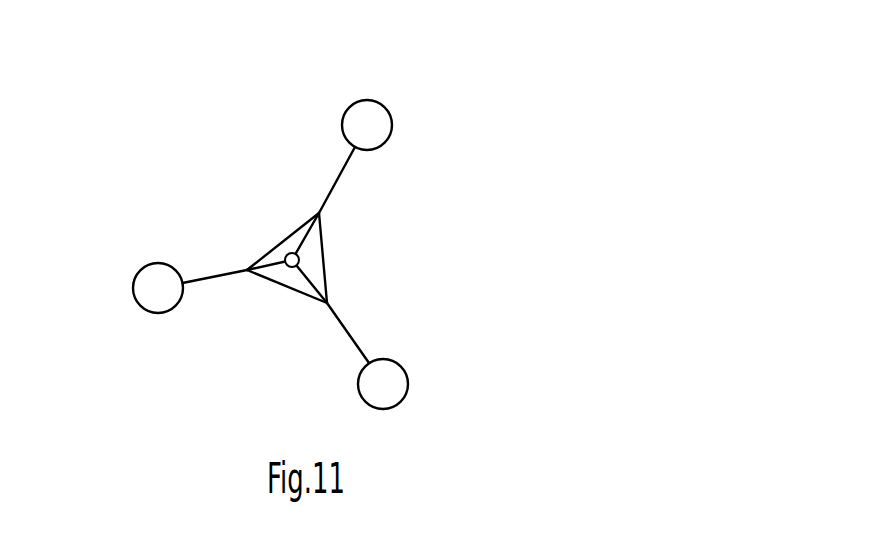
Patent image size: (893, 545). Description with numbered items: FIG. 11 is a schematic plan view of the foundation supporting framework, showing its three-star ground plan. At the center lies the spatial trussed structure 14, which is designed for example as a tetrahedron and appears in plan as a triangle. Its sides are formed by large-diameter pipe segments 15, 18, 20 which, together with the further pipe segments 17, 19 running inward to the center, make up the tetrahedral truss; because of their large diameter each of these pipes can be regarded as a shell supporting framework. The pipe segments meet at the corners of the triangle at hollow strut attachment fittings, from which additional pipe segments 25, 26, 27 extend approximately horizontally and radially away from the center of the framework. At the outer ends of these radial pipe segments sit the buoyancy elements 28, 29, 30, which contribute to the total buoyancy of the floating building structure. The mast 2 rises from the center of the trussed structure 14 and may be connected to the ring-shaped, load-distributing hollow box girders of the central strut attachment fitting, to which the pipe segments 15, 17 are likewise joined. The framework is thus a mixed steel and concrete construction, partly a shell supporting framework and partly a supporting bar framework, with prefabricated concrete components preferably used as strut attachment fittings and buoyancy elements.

The mast 2 is at (290, 253).
The central spatial trussed structure 14 is at (332, 246).
The pipe segment 15 is at (270, 279).
The pipe segment 17 is at (312, 278).
The pipe segment 18 is at (278, 242).
The pipe segment 19 is at (292, 288).
The pipe segment 20 is at (324, 266).
The pipe segment 25 is at (208, 277).
The pipe segment 26 is at (358, 342).
The arm 27 is at (340, 178).
The buoyancy element 28 is at (135, 303).
The buoyancy element 29 is at (407, 368).
The buoyancy element 30 is at (392, 122).